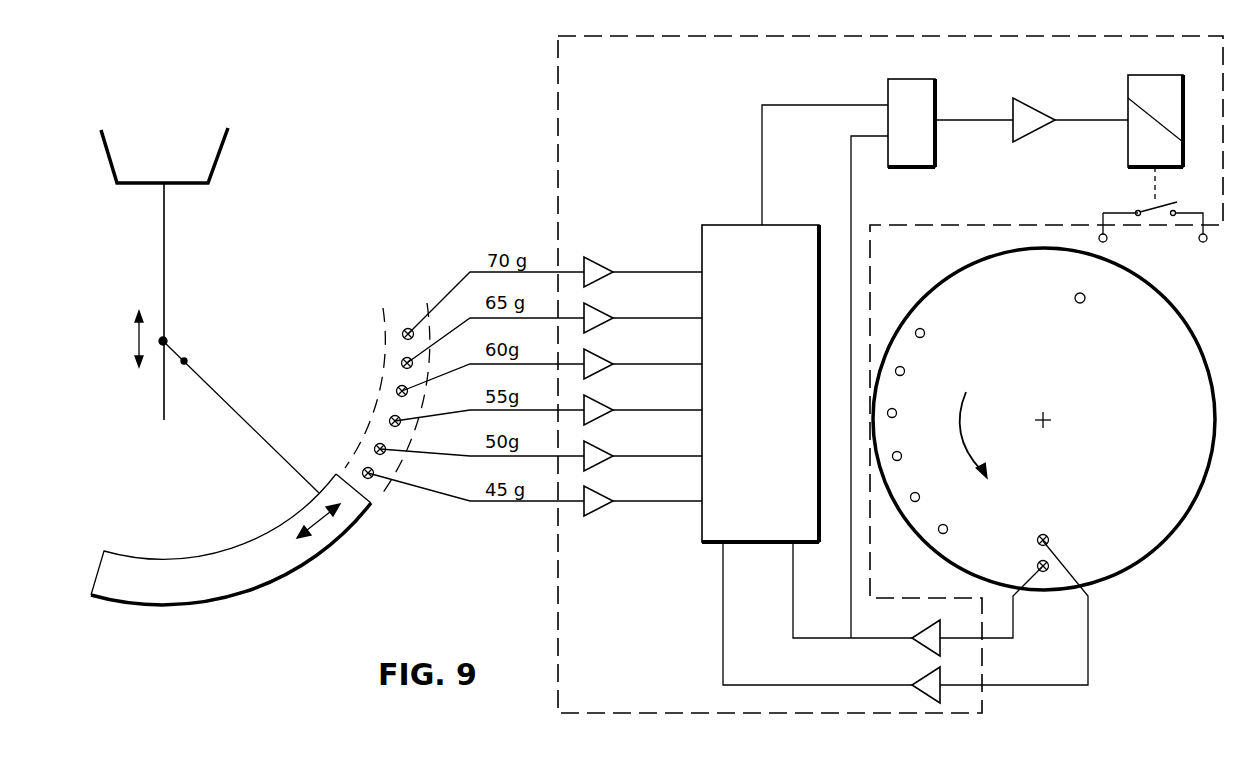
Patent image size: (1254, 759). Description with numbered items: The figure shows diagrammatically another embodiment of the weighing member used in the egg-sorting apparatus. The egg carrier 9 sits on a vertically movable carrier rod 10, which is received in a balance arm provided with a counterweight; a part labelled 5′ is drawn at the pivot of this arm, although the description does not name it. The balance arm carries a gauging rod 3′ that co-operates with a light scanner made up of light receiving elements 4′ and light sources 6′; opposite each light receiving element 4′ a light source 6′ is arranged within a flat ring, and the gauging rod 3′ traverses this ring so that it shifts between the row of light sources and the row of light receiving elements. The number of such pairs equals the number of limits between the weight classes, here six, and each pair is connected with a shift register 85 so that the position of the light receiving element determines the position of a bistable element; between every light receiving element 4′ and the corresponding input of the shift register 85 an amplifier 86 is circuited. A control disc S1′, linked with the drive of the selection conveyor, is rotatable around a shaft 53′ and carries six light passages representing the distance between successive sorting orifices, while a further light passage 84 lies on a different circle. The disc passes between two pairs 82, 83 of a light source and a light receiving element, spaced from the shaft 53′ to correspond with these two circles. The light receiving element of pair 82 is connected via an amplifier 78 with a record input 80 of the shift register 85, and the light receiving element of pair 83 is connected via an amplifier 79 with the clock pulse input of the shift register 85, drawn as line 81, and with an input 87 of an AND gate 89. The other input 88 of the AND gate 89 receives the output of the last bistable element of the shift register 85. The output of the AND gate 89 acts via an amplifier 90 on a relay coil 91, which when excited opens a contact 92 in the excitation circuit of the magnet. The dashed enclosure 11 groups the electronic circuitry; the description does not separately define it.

The egg carrier 9 is at (225, 144).
The carrier rod 10 is at (165, 271).
The lever arm 5′ is at (220, 392).
The gauging rod 3′ is at (280, 562).
The light receiving element 4′ is at (361, 404).
The light source 6′ is at (403, 335).
The amplifier 86 is at (592, 367).
The shift register 85 is at (738, 264).
The other input of the AND gate 88 is at (848, 104).
The input of the AND gate 87 is at (875, 135).
The AND gate 89 is at (908, 82).
The amplifier 90 is at (1028, 112).
The relay coil 91 is at (1133, 91).
The contact 92 is at (1143, 217).
The record input 80 is at (724, 548).
The line 81 is at (795, 573).
The amplifier 79 is at (918, 643).
The amplifier 78 is at (935, 683).
The control disc S1′ is at (1157, 312).
The shaft 53′ is at (1050, 425).
The light passage 84 is at (1085, 300).
The pair of a light source and a light receiving element 82 is at (1048, 534).
The pair of a light source and a light receiving element 83 is at (1036, 563).
The control unit 11 is at (643, 691).